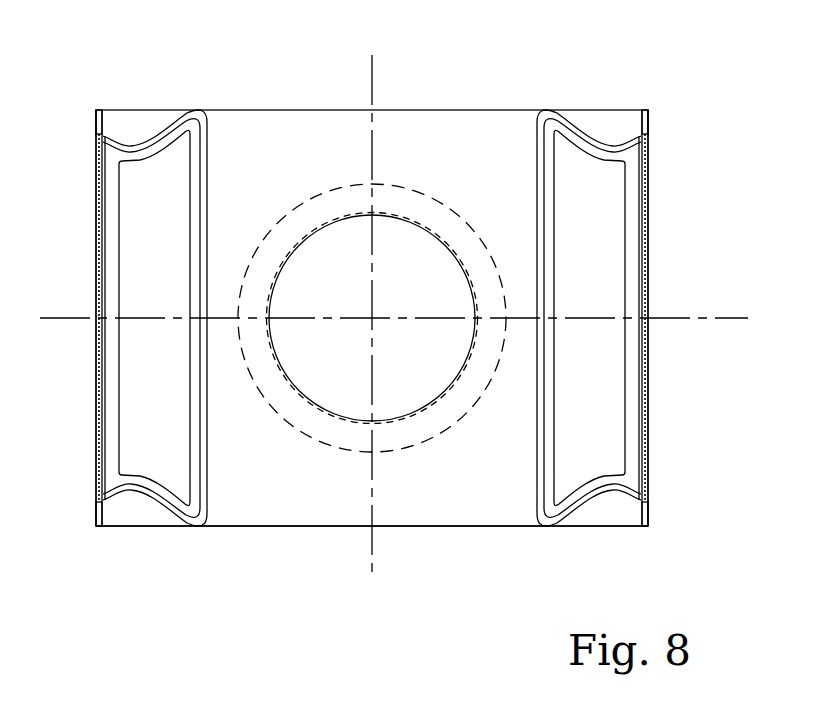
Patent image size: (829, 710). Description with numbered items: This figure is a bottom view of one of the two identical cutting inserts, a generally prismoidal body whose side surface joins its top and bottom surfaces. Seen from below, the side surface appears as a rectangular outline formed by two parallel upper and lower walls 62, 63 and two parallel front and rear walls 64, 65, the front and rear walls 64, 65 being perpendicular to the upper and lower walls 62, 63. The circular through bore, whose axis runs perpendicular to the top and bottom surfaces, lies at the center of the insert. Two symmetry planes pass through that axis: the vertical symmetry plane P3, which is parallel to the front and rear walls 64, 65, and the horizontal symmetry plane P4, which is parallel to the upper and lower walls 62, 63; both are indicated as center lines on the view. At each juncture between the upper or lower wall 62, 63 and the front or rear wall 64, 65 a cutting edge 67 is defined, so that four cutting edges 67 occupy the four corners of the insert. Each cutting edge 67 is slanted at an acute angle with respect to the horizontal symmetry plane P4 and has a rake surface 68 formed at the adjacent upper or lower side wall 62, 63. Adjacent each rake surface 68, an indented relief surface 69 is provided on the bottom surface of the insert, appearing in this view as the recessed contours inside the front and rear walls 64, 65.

The upper wall 62 is at (478, 90).
The lower wall 63 is at (434, 553).
The front wall 64 is at (80, 364).
The rear wall 65 is at (670, 373).
The cutting edge 67 is at (97, 122).
The rake surface 68 is at (605, 127).
The indented relief surface 69 is at (140, 190).
The vertical symmetry plane P3 is at (373, 80).
The horizontal symmetry plane P4 is at (717, 318).